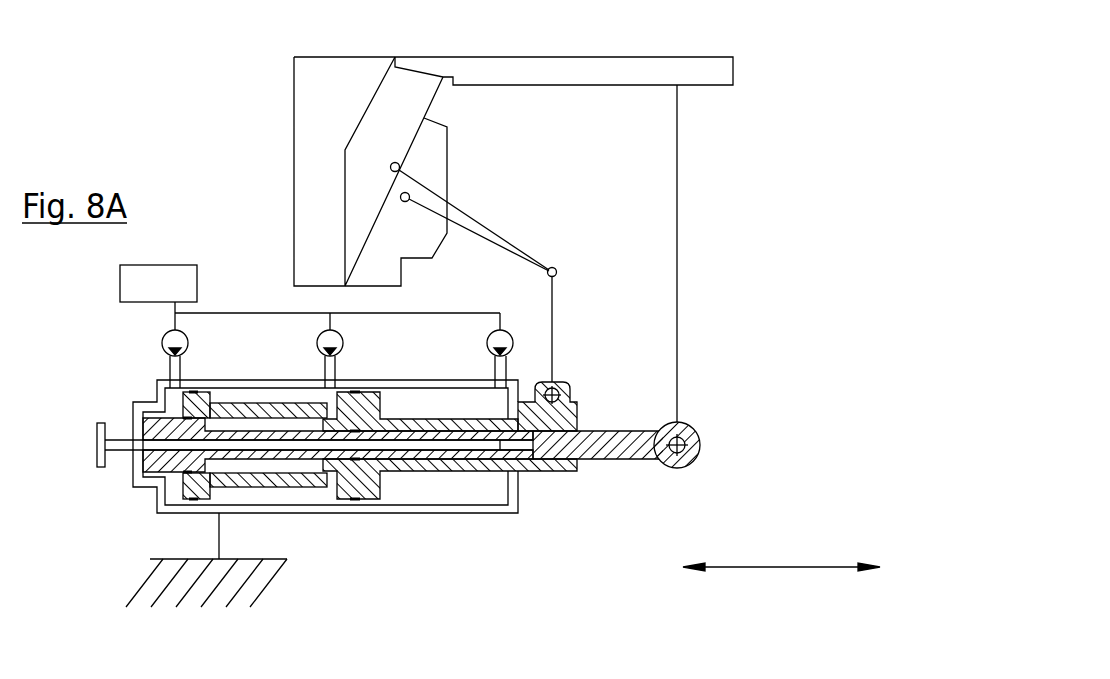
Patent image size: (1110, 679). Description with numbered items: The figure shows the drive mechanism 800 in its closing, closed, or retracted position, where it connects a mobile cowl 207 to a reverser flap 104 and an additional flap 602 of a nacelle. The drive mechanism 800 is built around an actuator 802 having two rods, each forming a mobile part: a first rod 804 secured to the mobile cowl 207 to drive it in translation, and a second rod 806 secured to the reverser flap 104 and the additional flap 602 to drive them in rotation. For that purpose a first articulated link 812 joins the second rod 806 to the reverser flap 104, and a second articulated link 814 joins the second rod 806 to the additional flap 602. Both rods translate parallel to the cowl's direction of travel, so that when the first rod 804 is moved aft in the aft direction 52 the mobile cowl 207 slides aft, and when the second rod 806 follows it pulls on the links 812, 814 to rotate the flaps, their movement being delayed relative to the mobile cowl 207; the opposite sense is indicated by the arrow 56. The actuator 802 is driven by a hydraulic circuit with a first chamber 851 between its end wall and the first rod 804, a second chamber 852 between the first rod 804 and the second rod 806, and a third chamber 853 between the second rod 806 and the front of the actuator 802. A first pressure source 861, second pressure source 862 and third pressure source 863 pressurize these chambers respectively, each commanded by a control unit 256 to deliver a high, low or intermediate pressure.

The drive mechanism 800 is at (805, 78).
The actuator 802 is at (110, 564).
The reverser flap 104 is at (390, 122).
The mobile cowl 207 is at (607, 67).
The additional flap 602 is at (423, 150).
The first articulated link 812 is at (467, 210).
The second articulated link 814 is at (487, 235).
The second rod 806 is at (560, 413).
The first rod 804 is at (617, 447).
The first chamber 851 is at (172, 488).
The second chamber 852 is at (275, 465).
The third chamber 853 is at (433, 492).
The first pressure source 861 is at (163, 342).
The second pressure source 862 is at (317, 343).
The third pressure source 863 is at (488, 343).
The control unit 256 is at (186, 298).
The first direction 56 is at (771, 592).
The aft direction 52 is at (875, 595).